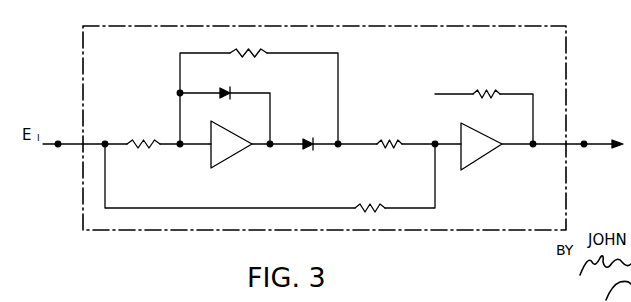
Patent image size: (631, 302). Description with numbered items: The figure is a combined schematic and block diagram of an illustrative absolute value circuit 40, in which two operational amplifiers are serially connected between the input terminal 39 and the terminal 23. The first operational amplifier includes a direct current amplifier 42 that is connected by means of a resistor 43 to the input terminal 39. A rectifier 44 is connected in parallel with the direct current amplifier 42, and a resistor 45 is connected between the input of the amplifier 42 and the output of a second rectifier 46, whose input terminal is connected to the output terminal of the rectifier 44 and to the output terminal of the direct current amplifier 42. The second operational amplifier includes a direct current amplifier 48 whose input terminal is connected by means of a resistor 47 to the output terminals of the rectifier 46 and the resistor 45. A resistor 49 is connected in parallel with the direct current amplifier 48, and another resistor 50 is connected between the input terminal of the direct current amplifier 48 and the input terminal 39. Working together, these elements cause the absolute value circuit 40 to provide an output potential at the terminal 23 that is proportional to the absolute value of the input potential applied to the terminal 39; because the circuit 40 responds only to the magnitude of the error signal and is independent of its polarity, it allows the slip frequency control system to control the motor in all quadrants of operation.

The terminal 23 is at (586, 142).
The input terminal 39 is at (58, 146).
The absolute value circuit 40 is at (160, 26).
The direct current amplifier 42 is at (259, 167).
The resistor 43 is at (145, 141).
The rectifier 44 is at (232, 86).
The resistor 45 is at (257, 58).
The rectifier 46 is at (314, 148).
The resistor 47 is at (389, 142).
The direct current amplifier 48 is at (499, 170).
The resistor 49 is at (497, 92).
The resistor 50 is at (383, 206).